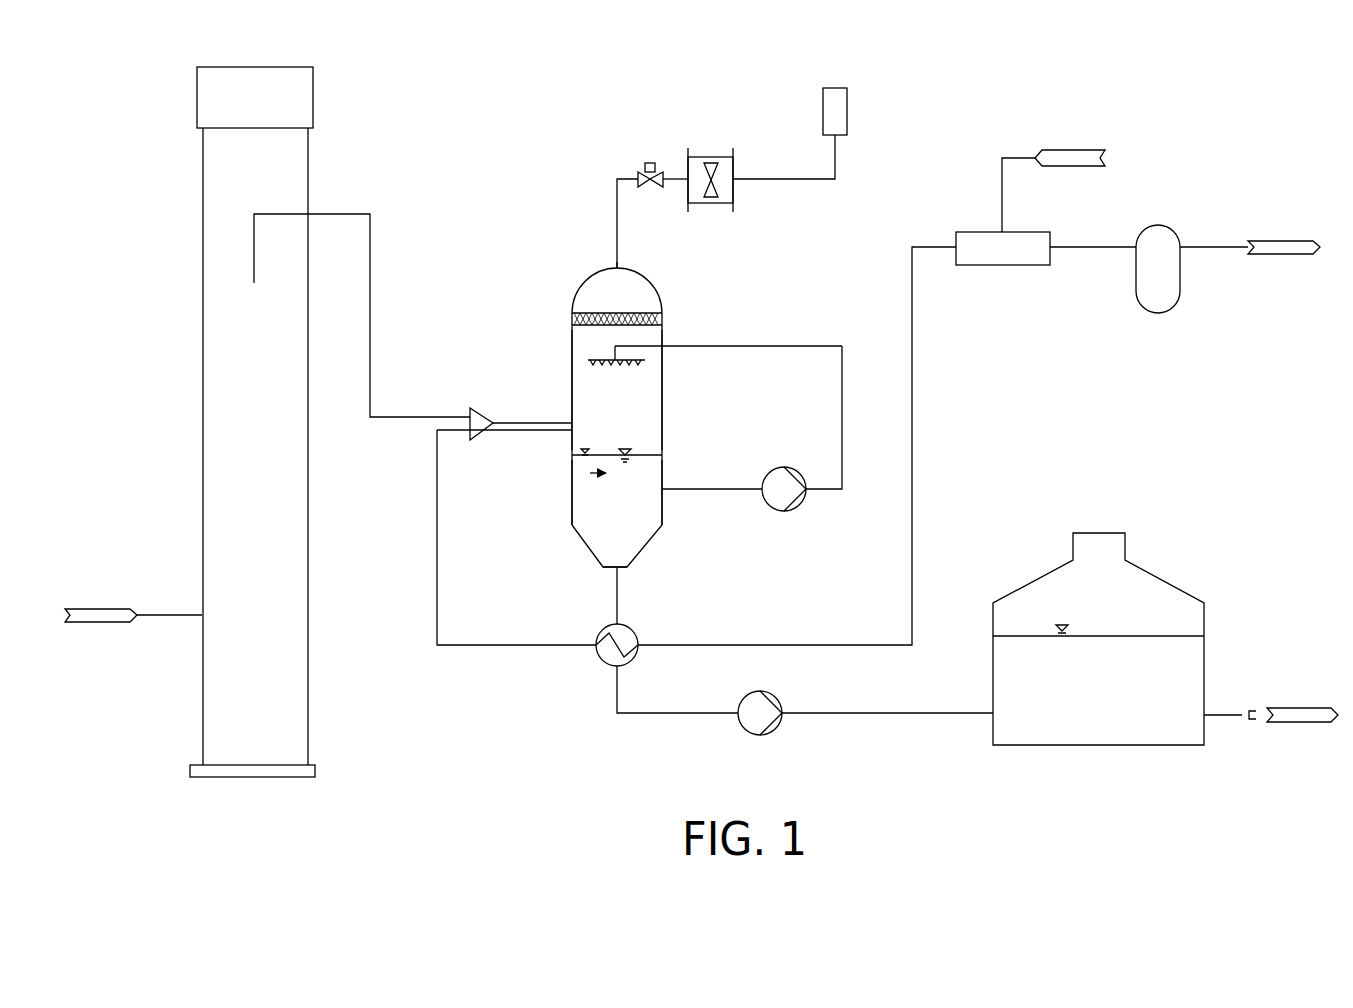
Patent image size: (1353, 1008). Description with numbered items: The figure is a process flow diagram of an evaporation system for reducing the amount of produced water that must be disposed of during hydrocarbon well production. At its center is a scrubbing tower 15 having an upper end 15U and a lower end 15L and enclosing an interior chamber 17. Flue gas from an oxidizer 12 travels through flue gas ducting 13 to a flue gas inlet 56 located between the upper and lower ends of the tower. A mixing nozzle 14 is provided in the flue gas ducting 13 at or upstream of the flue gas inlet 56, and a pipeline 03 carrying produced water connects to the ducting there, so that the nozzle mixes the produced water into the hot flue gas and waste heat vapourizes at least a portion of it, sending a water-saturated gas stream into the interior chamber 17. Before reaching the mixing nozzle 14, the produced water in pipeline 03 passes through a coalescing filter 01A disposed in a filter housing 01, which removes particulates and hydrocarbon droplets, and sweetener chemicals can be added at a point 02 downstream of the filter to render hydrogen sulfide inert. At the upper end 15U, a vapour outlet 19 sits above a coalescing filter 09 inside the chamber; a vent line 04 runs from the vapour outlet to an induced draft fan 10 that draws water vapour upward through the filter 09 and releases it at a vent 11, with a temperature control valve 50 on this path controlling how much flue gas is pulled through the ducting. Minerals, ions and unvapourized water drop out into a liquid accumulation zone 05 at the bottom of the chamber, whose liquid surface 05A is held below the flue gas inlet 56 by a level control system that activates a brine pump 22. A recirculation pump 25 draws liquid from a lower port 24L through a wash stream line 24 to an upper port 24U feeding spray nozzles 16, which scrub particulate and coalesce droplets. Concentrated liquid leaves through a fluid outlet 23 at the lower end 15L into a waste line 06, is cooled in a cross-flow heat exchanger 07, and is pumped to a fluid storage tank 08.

The oxidizer 12 is at (308, 175).
The flue gas ducting 13 is at (370, 307).
The mixing nozzle 14 is at (483, 409).
The flue gas inlet 56 is at (567, 432).
The pipeline 03 is at (437, 548).
The scrubbing tower 15 is at (571, 383).
The upper end 15U is at (610, 262).
The lower end 15L is at (600, 570).
The vapour outlet 19 is at (622, 268).
The vent line 04 is at (618, 233).
The temperature control valve 50 is at (650, 163).
The induced draft fan 10 is at (715, 203).
The vent 11 is at (823, 112).
The coalescing filter 09 is at (572, 318).
The spray nozzles 16 is at (598, 360).
The interior chamber 17 is at (612, 395).
The liquid surface 05A is at (628, 452).
The liquid accumulation zone 05 is at (576, 478).
The fluid outlet 23 is at (612, 572).
The wash stream line 24 is at (728, 428).
The upper port 24U is at (665, 340).
The lower port 24L is at (712, 467).
The recirculation pump 25 is at (792, 509).
The waste line 06 is at (618, 595).
The cross-flow heat exchanger 07 is at (596, 657).
The brine pump 22 is at (770, 735).
The fluid storage tank 08 is at (1150, 572).
The sweetener addition point 02 is at (990, 265).
The filter housing 01 is at (1185, 251).
The coalescing filter 01A is at (1165, 225).